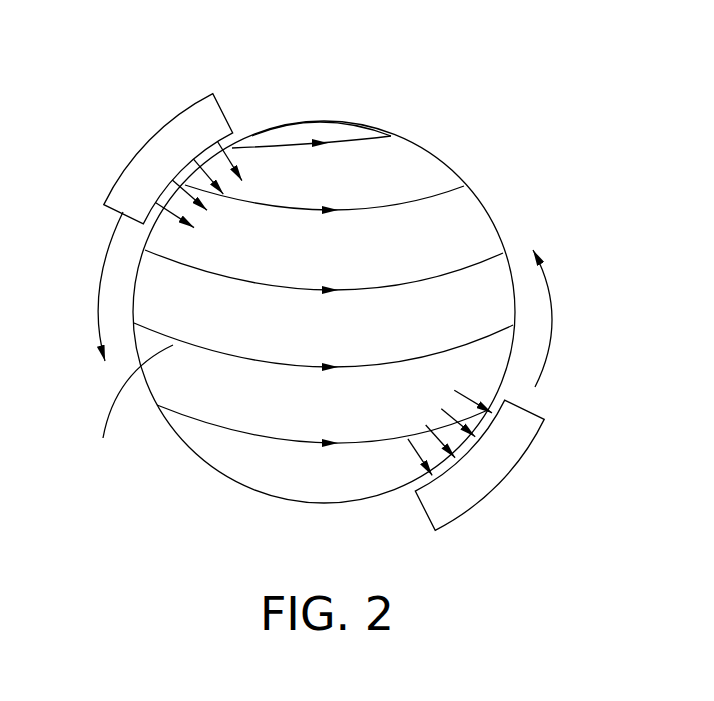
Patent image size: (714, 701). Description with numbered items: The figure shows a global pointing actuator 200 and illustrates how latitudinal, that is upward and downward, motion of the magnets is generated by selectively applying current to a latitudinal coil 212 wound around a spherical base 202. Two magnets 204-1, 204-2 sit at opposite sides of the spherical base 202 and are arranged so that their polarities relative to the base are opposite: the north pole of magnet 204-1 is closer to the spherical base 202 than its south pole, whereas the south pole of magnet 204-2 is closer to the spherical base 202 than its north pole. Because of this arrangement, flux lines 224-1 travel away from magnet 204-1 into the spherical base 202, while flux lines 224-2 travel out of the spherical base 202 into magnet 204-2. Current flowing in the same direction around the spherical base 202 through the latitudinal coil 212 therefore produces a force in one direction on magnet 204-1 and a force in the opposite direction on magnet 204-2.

The global pointing actuator 200 is at (466, 107).
The spherical base 202 is at (482, 237).
The magnet 204-1 is at (118, 178).
The magnet 204-2 is at (512, 465).
The latitudinal coil 212 is at (212, 428).
The flux lines 224-1 is at (246, 156).
The flux lines 224-2 is at (410, 445).